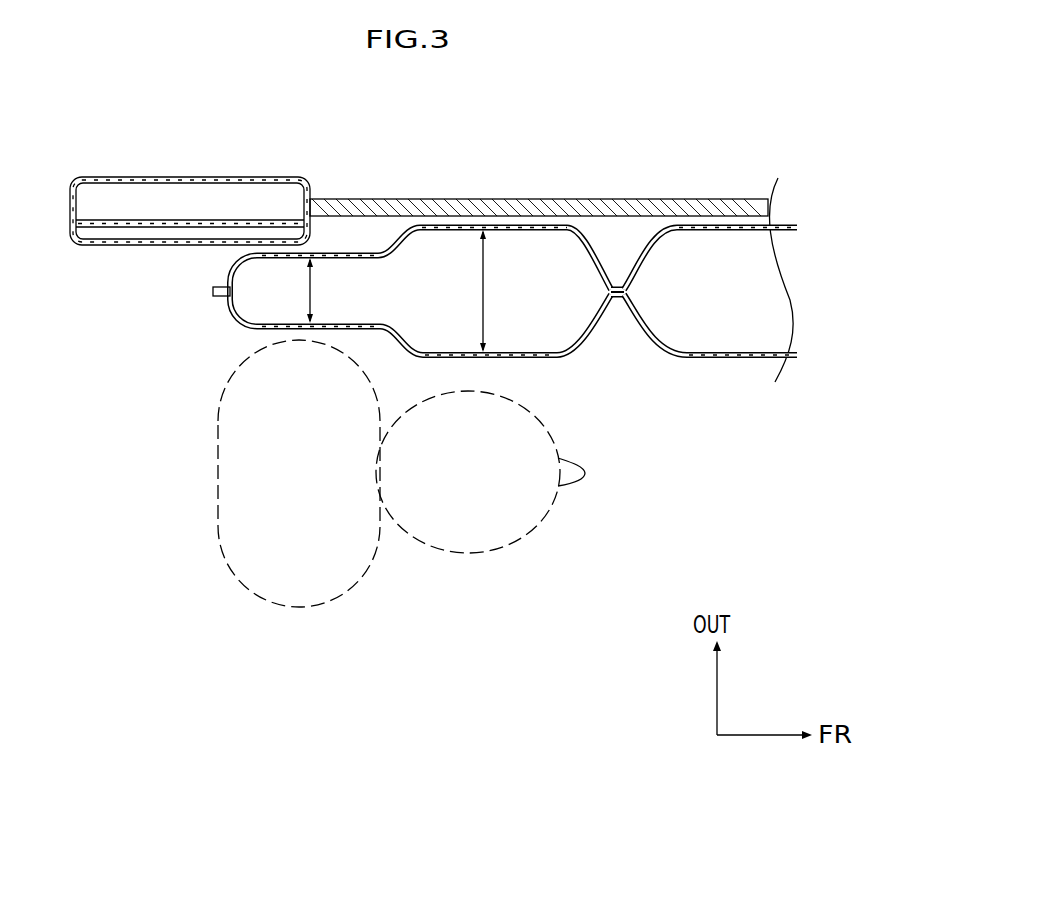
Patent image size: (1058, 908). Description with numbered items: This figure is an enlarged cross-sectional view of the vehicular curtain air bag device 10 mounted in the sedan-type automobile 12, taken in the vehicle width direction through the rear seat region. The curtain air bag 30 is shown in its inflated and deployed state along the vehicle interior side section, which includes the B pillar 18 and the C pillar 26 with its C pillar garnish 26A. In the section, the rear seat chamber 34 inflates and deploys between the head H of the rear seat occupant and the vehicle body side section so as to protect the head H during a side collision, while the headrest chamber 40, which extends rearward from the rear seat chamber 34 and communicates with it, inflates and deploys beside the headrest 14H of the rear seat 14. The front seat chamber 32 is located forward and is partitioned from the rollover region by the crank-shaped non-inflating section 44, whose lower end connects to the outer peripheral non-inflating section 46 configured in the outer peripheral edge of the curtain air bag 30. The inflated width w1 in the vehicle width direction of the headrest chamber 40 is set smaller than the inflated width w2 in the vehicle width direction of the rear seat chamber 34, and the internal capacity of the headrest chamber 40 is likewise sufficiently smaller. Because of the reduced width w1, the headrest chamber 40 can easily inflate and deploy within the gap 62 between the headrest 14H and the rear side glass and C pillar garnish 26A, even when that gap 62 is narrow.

The vehicular curtain air bag device 10 is at (472, 329).
The automobile 12 is at (419, 203).
The B pillar 18 is at (588, 198).
The C pillar 26 is at (190, 212).
The C pillar garnish 26A is at (105, 245).
The gap 62 is at (277, 252).
The outer peripheral non-inflating section 46 is at (213, 291).
The headrest chamber 40 is at (264, 269).
The rear seat chamber 34 is at (548, 359).
The crank-shaped non-inflating section 44 is at (617, 298).
The curtain air bag 30 is at (710, 332).
The front seat chamber 32 is at (758, 358).
The headrest 14H is at (247, 473).
The rear seat 14 is at (218, 488).
The head H is at (474, 553).
The inflated width of headrest chamber w1 is at (318, 292).
The inflated width of rear seat chamber w2 is at (490, 292).